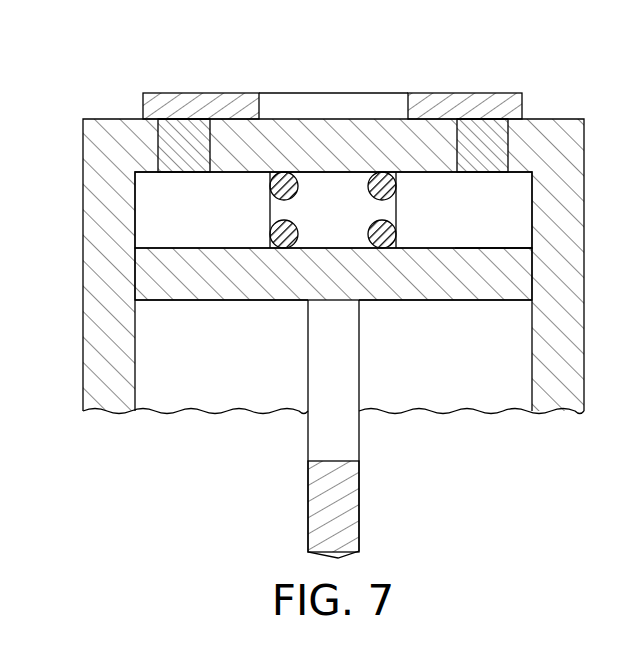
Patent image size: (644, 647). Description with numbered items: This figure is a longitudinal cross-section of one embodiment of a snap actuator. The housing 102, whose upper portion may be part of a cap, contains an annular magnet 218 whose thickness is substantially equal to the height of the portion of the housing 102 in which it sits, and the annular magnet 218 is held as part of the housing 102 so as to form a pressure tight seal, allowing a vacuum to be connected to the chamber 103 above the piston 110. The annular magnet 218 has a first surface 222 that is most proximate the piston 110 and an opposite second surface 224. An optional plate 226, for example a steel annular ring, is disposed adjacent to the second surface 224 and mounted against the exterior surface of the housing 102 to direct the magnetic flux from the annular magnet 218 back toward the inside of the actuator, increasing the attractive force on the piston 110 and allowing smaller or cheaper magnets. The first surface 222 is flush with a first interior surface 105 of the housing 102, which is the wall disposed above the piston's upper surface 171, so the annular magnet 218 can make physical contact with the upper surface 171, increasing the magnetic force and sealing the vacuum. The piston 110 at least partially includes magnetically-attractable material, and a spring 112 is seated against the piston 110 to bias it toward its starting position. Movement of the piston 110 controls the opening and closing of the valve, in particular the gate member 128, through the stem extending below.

The housing 102 is at (82, 111).
The chamber 103 is at (136, 238).
The first interior surface 105 is at (239, 174).
The piston 110 is at (181, 305).
The spring 112 is at (399, 210).
The gate member 128 is at (362, 494).
The upper surface 171 is at (478, 247).
The annular magnet 218 is at (197, 116).
The first surface 222 is at (179, 174).
The second surface 224 is at (504, 117).
The plate 226 is at (518, 91).